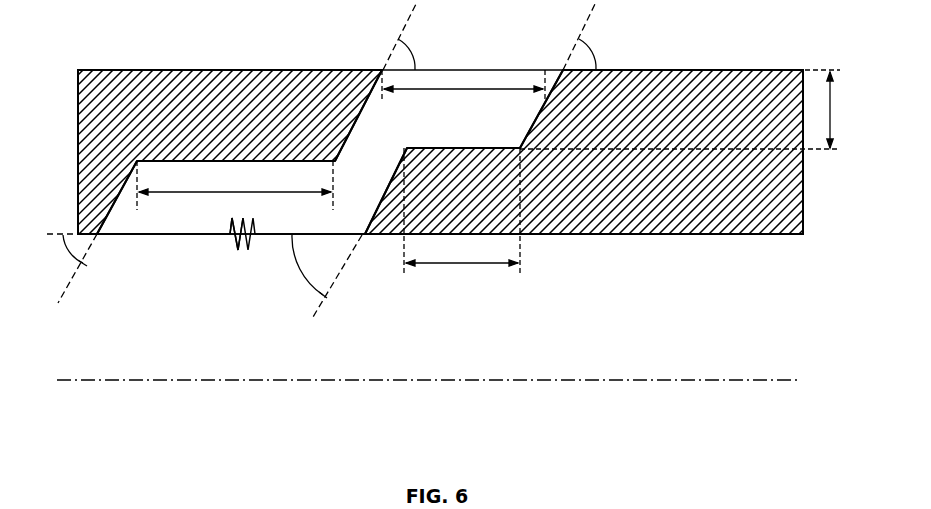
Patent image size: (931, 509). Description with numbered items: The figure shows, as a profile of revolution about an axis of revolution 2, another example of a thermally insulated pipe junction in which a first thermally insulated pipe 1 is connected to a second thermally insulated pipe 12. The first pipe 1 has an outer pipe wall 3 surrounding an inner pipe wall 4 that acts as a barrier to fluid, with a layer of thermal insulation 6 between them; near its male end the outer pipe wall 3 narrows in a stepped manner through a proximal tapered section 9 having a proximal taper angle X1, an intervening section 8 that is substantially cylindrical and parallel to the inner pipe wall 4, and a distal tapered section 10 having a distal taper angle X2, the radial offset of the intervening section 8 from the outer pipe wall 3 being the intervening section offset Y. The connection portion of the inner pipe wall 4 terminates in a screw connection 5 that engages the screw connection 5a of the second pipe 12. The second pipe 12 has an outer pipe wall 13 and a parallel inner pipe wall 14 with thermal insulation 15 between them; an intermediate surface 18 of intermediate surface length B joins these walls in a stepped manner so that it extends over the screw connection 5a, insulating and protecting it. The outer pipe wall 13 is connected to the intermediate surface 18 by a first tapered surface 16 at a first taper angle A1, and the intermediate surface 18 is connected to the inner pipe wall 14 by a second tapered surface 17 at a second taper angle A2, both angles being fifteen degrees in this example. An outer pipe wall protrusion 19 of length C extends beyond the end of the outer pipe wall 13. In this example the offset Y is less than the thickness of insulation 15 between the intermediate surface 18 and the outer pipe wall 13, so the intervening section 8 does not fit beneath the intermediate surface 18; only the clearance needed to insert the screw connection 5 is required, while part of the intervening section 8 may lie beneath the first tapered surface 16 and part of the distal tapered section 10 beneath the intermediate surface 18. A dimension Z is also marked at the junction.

The thermally insulated pipe 1 is at (710, 273).
The axis of revolution 2 is at (330, 381).
The outer pipe wall 3 is at (663, 70).
The inner pipe wall 4 is at (620, 234).
The screw connection 5 is at (250, 258).
The screw connection 5a is at (235, 258).
The layer of thermal insulation 6 is at (773, 210).
The intervening section 8 is at (445, 147).
The proximal tapered section 9 is at (530, 125).
The distal tapered section 10 is at (366, 221).
The thermally insulated pipe 12 is at (155, 50).
The outer pipe wall 13 is at (102, 70).
The inner pipe wall 14 is at (190, 235).
The thermal insulation 15 is at (195, 92).
The first tapered surface 16 is at (347, 132).
The second tapered surface 17 is at (111, 208).
The intermediate surface 18 is at (210, 162).
The outer pipe wall protrusion 19 is at (382, 68).
The first taper angle A1 is at (397, 58).
The second taper angle A2 is at (80, 250).
The proximal taper angle X1 is at (578, 58).
The distal taper angle X2 is at (322, 262).
The intermediate surface length B is at (235, 189).
The length of the outer pipe wall protrusion C is at (463, 91).
The intervening section offset Y is at (684, 109).
The dimension Z is at (462, 211).